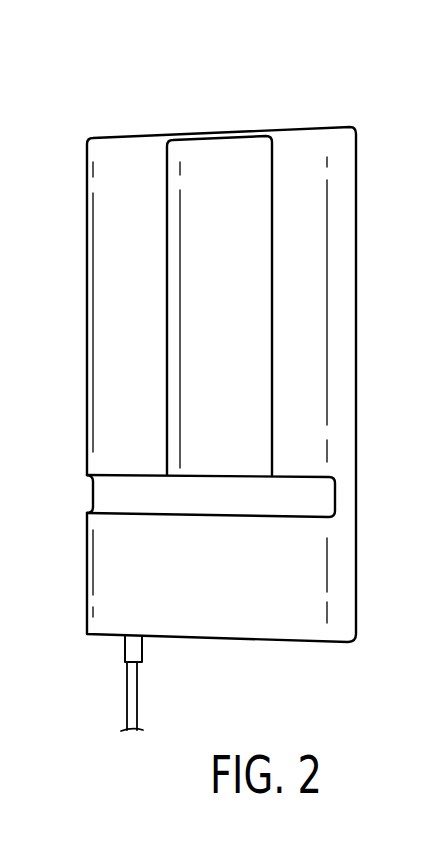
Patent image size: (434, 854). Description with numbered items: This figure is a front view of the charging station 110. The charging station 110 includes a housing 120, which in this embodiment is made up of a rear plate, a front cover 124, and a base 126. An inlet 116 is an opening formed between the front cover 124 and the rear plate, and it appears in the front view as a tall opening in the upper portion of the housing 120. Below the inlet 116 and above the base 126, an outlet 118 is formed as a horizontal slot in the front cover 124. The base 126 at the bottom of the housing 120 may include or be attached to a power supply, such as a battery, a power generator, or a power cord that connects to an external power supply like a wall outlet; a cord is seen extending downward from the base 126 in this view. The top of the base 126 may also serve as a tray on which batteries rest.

The charging station 110 is at (230, 389).
The inlet 116 is at (123, 143).
The outlet 118 is at (115, 495).
The housing 120 is at (357, 190).
The front cover 124 is at (338, 308).
The base 126 is at (215, 595).